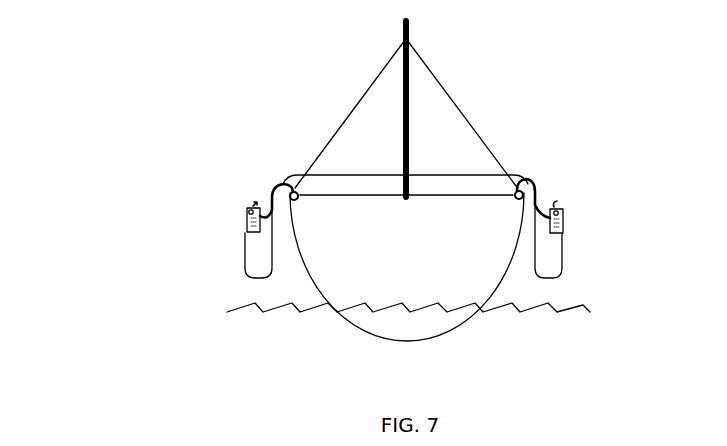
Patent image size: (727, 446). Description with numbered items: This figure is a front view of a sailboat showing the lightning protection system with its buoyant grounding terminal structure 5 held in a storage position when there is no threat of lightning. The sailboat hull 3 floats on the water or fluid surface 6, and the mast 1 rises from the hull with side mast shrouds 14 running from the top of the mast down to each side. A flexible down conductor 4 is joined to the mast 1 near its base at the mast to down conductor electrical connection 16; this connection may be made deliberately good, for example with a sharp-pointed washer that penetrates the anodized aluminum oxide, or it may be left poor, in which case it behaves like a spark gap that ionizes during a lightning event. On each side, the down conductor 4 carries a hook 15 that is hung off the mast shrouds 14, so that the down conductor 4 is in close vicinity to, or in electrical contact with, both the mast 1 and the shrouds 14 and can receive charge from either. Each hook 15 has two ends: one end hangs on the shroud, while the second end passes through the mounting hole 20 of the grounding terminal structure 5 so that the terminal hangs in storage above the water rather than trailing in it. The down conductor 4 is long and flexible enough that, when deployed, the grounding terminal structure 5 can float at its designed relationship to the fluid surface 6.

The mast 1 is at (405, 109).
The sailboat hull 3 is at (377, 348).
The down conductor 4 is at (449, 164).
The grounding terminal structure 5 is at (243, 223).
The water or fluid surface 6 is at (268, 318).
The mast shrouds 14 is at (348, 93).
The hook 15 is at (268, 192).
The mast to down conductor electrical connection 16 is at (400, 165).
The mounting hole 20 is at (247, 208).